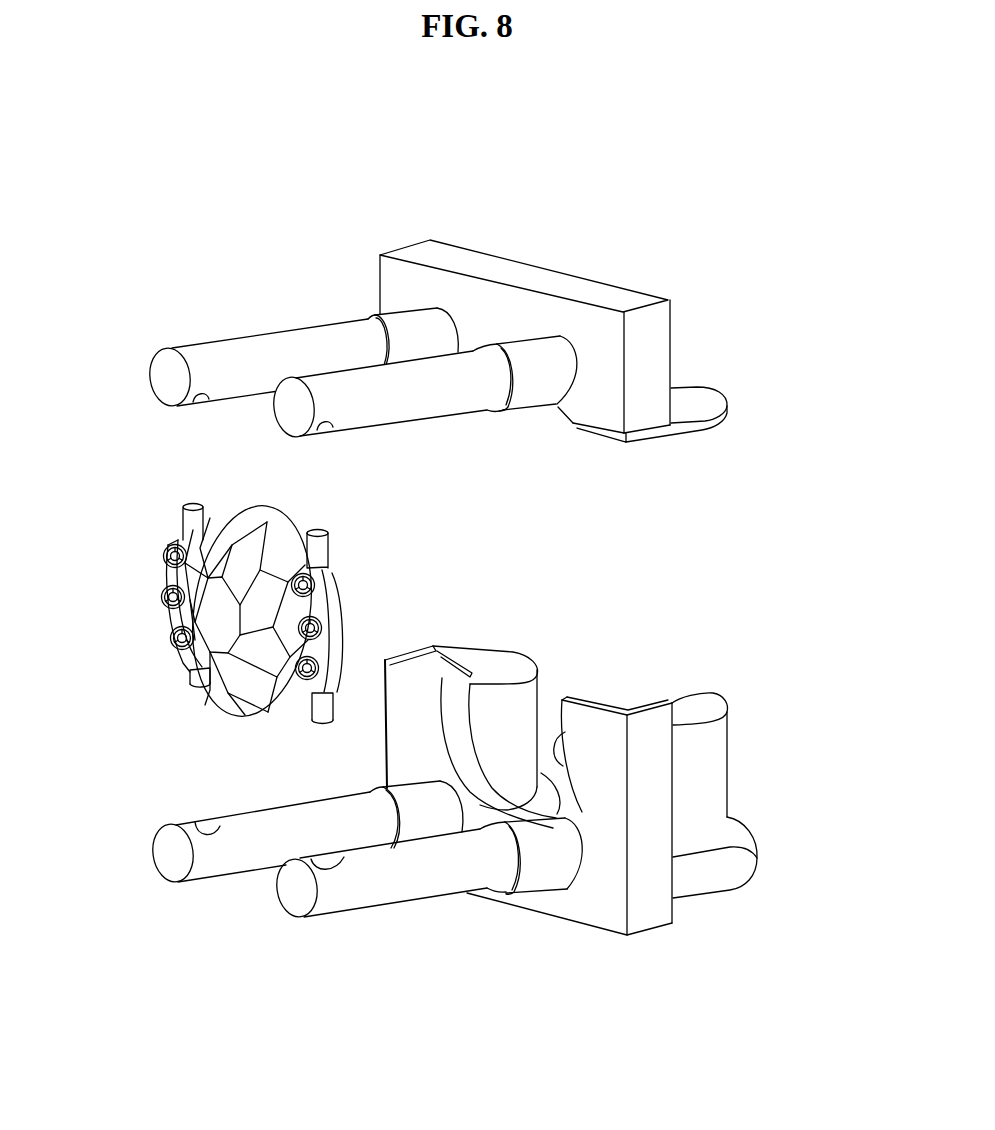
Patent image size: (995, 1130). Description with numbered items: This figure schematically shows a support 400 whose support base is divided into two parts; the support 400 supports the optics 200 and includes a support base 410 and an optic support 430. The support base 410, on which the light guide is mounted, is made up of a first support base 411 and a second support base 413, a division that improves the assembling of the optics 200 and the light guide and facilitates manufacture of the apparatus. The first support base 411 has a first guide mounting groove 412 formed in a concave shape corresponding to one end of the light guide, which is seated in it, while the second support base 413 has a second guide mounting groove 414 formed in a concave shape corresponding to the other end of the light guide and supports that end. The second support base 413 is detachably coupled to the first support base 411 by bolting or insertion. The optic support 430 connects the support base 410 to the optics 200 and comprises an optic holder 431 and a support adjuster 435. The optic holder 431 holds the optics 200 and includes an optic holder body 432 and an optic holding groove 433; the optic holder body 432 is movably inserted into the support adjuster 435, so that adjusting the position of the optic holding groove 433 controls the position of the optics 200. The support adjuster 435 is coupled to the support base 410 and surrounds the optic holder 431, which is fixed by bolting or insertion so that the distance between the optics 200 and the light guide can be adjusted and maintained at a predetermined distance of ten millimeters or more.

The optics 200 is at (158, 568).
The support 400 is at (505, 299).
The support base 410 is at (607, 795).
The first support base 411 is at (643, 919).
The first guide mounting groove 412 is at (551, 776).
The second support base 413 is at (600, 293).
The second guide mounting groove 414 is at (562, 413).
The optic support 430 is at (370, 916).
The optic holder 431 is at (327, 906).
The optic holder body 432 is at (412, 878).
The optic holding groove 433 is at (332, 864).
The support adjuster 435 is at (548, 908).